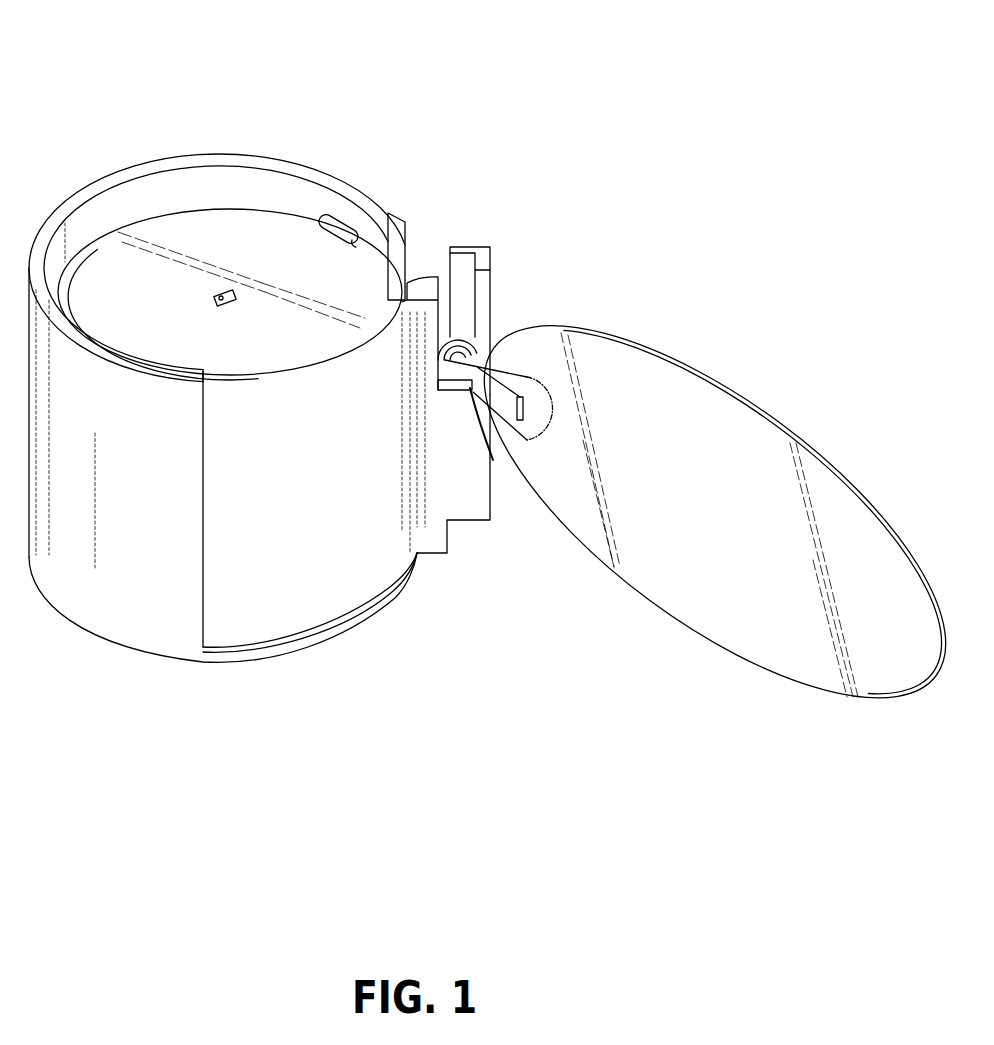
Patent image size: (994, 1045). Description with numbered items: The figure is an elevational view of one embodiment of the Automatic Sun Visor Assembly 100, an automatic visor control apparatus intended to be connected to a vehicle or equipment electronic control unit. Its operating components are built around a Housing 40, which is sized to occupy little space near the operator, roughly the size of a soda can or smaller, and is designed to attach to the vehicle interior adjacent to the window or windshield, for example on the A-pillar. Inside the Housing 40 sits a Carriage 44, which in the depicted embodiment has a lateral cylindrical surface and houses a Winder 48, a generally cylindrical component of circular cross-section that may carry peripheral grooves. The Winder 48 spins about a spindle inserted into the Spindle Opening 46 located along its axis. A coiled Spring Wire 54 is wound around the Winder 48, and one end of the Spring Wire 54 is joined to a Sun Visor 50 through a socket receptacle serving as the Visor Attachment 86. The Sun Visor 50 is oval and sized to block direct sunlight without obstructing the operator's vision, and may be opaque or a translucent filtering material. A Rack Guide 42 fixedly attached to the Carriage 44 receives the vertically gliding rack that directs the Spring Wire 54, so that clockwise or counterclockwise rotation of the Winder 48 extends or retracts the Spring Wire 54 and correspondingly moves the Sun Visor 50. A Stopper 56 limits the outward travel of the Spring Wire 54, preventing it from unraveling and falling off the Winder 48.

The Automatic Sun Visor Assembly 100 is at (607, 62).
The Housing 40 is at (345, 180).
The Rack Guide 42 is at (490, 270).
The Carriage 44 is at (360, 563).
The Spindle Opening 46 is at (238, 300).
The Winder 48 is at (173, 268).
The Sun Visor 50 is at (700, 377).
The Spring Wire 54 is at (463, 367).
The Stopper 56 is at (352, 240).
The Visor Attachment 86 is at (532, 395).